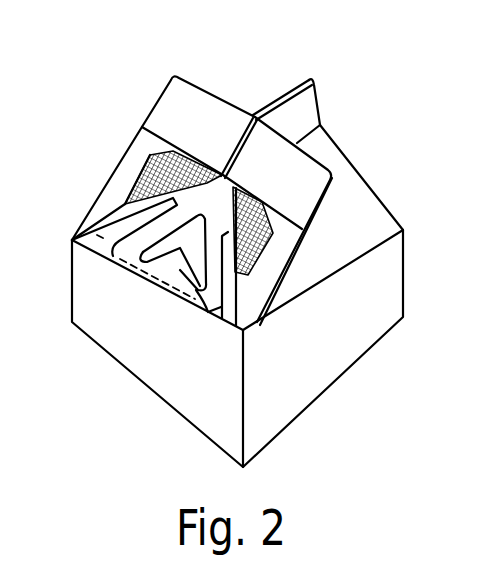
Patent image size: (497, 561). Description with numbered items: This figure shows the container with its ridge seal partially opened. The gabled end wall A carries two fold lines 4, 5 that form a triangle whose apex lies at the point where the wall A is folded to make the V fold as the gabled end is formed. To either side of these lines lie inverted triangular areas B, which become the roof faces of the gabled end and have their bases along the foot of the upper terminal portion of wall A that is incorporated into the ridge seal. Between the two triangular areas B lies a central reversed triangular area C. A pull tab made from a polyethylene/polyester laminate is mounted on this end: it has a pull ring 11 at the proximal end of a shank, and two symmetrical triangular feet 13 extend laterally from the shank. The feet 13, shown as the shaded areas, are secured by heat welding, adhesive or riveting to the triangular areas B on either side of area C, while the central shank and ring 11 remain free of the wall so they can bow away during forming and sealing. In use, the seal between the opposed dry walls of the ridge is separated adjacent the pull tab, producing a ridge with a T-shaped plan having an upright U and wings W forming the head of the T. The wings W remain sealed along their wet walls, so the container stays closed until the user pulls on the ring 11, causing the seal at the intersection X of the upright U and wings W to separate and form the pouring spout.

The gabled end wall A is at (466, 229).
The wings W is at (194, 117).
The intersection of upright and wings X is at (253, 114).
The upright U is at (308, 108).
The triangular feet 13 is at (155, 157).
The inverted triangular areas B is at (128, 173).
The fold line 4 is at (95, 235).
The reversed triangular area C is at (70, 262).
The pull ring 11 is at (180, 268).
The fold line 5 is at (233, 300).